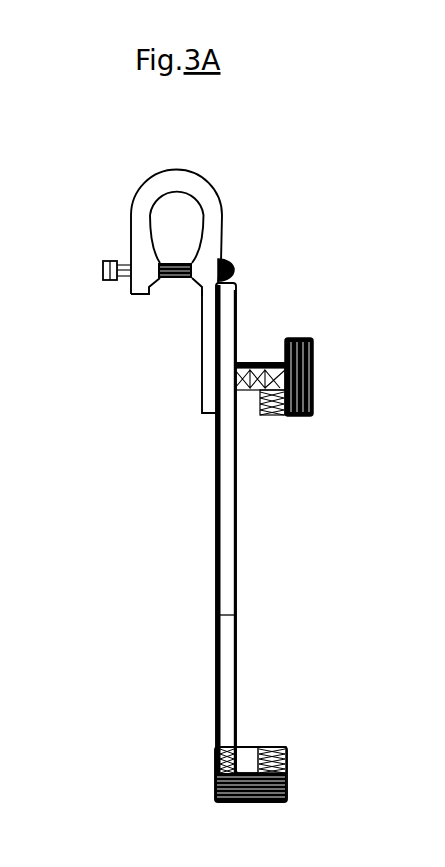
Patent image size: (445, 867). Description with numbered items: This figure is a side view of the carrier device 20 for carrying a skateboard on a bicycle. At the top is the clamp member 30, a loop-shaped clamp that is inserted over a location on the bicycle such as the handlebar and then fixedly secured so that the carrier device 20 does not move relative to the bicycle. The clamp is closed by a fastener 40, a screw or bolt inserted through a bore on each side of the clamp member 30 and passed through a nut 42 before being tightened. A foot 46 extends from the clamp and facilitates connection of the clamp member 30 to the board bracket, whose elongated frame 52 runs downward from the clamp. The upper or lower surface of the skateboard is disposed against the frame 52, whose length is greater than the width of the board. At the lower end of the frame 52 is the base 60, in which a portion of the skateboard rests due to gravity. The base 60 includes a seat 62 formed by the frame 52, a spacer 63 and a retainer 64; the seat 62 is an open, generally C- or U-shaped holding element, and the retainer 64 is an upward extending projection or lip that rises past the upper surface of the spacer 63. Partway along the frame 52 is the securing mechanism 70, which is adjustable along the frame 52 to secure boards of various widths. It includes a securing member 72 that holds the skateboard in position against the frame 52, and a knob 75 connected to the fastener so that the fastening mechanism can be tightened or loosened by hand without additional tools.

The carrier device 20 is at (201, 541).
The clamp member 30 is at (223, 194).
The fastener 40 is at (129, 268).
The nut 42 is at (104, 272).
The foot 46 is at (202, 352).
The frame 52 is at (211, 578).
The base 60 is at (291, 782).
The seat 62 is at (243, 757).
The spacer 63 is at (249, 772).
The retainer 64 is at (289, 755).
The securing mechanism 70 is at (317, 323).
The securing member 72 is at (259, 362).
The knob 75 is at (305, 417).